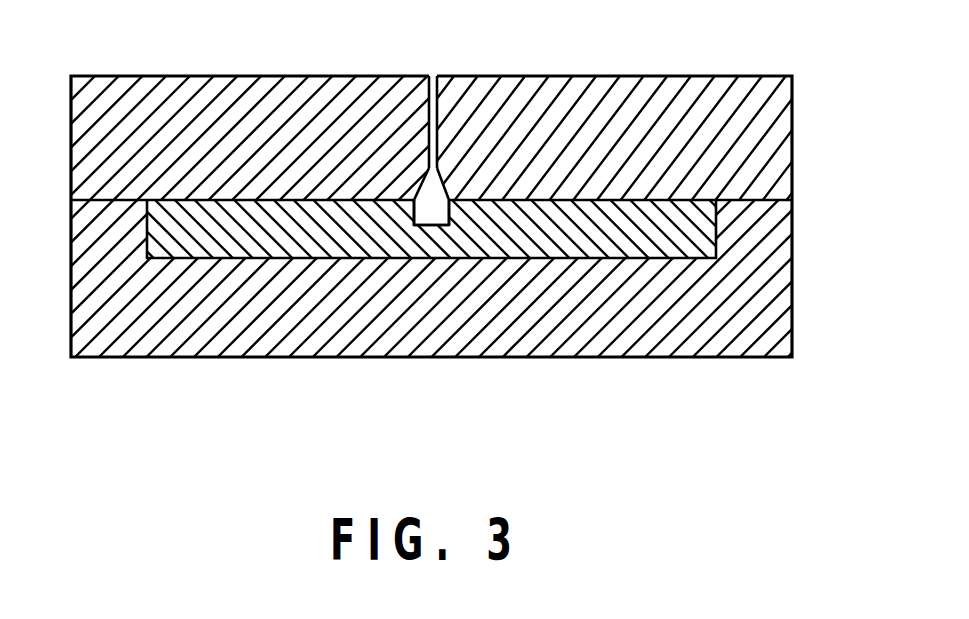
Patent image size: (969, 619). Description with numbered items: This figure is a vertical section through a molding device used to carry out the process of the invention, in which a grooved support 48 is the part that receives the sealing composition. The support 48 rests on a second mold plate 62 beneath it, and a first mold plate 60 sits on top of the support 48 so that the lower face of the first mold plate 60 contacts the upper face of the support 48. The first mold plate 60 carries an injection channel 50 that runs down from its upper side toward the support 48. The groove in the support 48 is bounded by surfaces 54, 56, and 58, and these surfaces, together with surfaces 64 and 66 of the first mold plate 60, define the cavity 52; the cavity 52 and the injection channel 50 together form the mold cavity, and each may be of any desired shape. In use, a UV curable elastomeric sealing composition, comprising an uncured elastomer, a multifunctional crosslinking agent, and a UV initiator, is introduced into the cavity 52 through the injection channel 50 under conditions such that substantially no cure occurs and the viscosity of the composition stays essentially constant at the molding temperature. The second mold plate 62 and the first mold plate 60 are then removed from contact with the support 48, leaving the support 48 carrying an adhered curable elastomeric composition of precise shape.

The support 48 is at (747, 233).
The injection channel 50 is at (433, 74).
The cavity 52 is at (430, 206).
The surface 54 is at (414, 222).
The surface 56 is at (426, 226).
The surface 58 is at (451, 207).
The first mold plate 60 is at (725, 128).
The second mold plate 62 is at (727, 317).
The surface 64 is at (447, 182).
The surface 66 is at (417, 180).